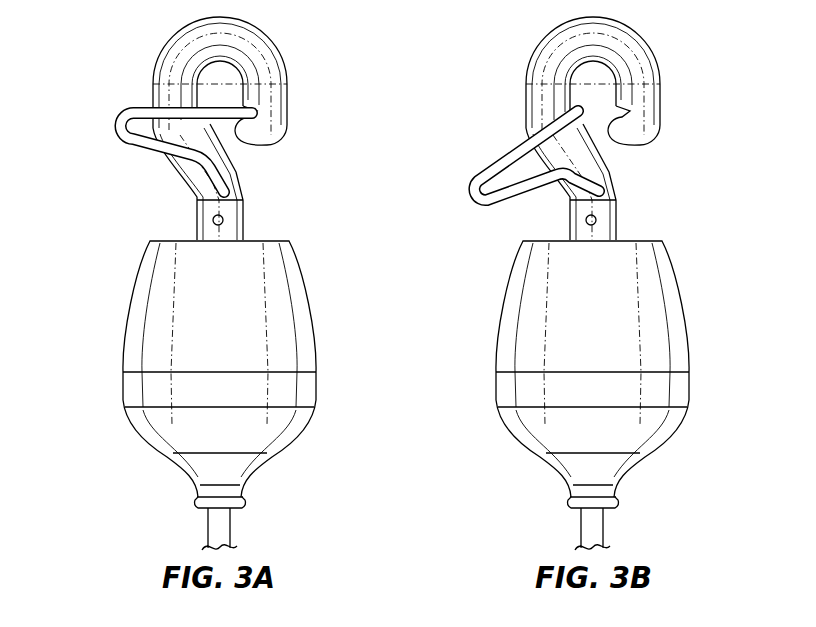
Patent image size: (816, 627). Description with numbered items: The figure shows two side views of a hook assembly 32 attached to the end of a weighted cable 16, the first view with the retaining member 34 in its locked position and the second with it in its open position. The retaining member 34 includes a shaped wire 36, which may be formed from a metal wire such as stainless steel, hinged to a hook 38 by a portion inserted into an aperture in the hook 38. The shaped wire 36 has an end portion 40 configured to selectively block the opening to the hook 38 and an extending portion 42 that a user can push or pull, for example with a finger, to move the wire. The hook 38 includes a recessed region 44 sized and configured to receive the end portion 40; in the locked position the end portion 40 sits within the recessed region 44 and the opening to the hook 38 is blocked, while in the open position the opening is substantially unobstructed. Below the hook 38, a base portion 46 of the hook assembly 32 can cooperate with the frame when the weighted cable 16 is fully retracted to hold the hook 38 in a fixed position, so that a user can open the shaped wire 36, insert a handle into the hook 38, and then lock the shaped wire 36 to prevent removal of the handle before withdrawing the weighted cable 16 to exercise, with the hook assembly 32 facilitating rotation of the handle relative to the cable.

In FIG. 3A, the weighted cable 16 is at (224, 528).
In FIG. 3B, the weighted cable 16 is at (599, 530).
In FIG. 3A, the hook assembly 32 is at (110, 97).
In FIG. 3B, the hook assembly 32 is at (698, 95).
In FIG. 3A, the retaining member 34 is at (152, 153).
In FIG. 3B, the retaining member 34 is at (532, 200).
In FIG. 3A, the shaped wire 36 is at (225, 115).
In FIG. 3B, the shaped wire 36 is at (510, 148).
In FIG. 3A, the hook 38 is at (258, 43).
In FIG. 3B, the hook 38 is at (640, 46).
In FIG. 3A, the end portion 40 is at (272, 103).
In FIG. 3B, the end portion 40 is at (593, 98).
In FIG. 3A, the extending portion 42 is at (110, 125).
In FIG. 3B, the extending portion 42 is at (458, 193).
In FIG. 3A, the recessed region 44 is at (233, 100).
In FIG. 3B, the recessed region 44 is at (617, 115).
In FIG. 3A, the base portion 46 is at (283, 394).
In FIG. 3B, the base portion 46 is at (648, 398).